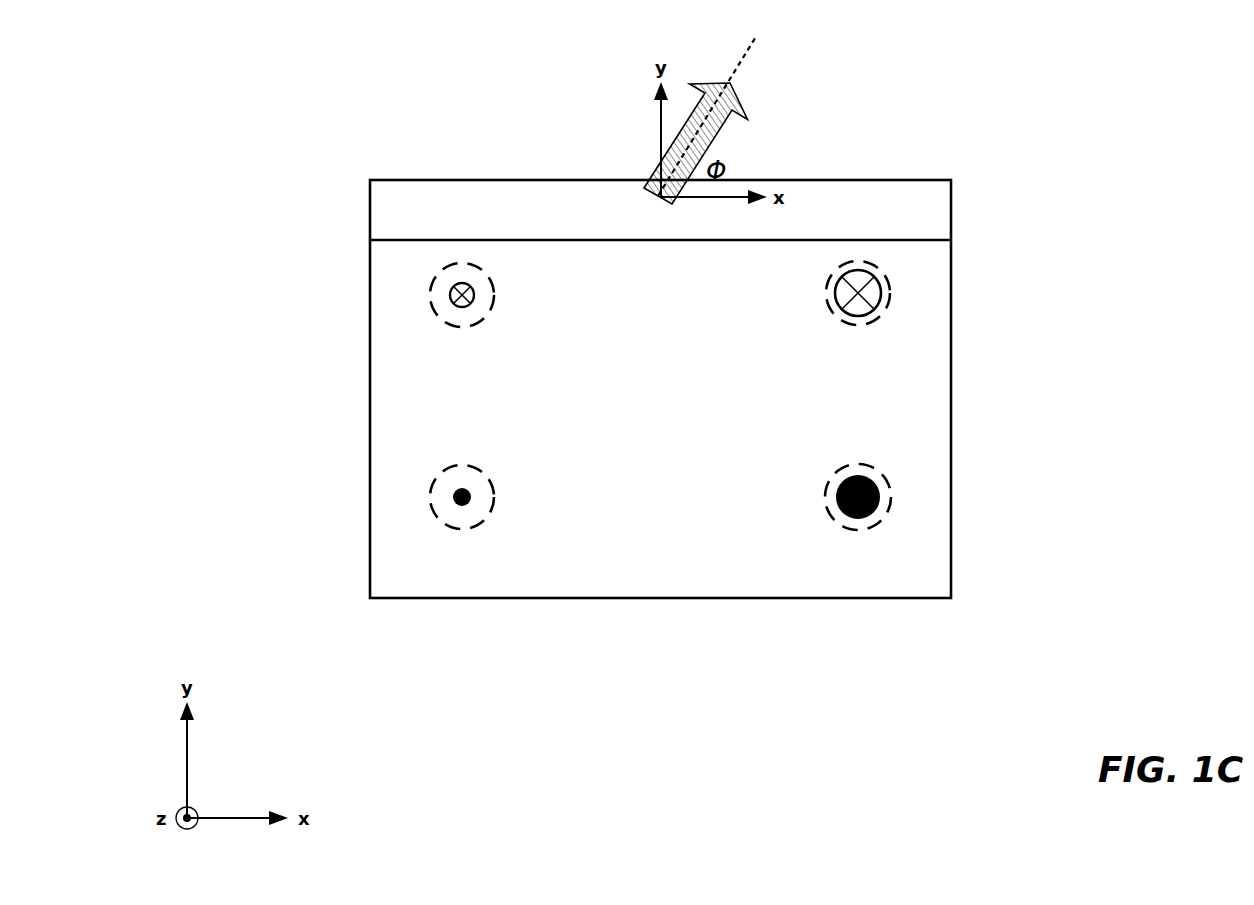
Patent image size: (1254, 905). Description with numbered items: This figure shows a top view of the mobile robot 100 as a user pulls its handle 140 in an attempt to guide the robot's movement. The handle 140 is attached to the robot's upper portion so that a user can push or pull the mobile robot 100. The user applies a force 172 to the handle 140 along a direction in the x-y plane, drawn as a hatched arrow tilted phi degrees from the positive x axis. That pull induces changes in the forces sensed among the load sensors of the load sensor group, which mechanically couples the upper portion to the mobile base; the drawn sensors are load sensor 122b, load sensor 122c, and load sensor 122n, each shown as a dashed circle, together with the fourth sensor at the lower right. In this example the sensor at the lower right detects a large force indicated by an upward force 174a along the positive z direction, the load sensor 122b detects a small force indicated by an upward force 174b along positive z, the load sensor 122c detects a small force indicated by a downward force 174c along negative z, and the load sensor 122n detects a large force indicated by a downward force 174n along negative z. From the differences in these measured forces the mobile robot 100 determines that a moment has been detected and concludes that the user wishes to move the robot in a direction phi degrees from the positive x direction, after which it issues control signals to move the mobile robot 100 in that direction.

The mobile robot 100 is at (238, 58).
The handle 140 is at (378, 206).
The force 172 is at (738, 98).
The load sensor 122b is at (444, 519).
The load sensor 122c is at (441, 276).
The load sensor 122n is at (889, 287).
The upward force 174a is at (851, 476).
The upward force 174b is at (470, 504).
The downward force 174c is at (470, 305).
The downward force 174n is at (850, 312).